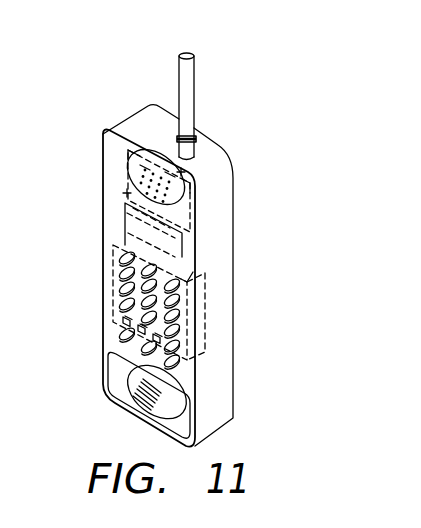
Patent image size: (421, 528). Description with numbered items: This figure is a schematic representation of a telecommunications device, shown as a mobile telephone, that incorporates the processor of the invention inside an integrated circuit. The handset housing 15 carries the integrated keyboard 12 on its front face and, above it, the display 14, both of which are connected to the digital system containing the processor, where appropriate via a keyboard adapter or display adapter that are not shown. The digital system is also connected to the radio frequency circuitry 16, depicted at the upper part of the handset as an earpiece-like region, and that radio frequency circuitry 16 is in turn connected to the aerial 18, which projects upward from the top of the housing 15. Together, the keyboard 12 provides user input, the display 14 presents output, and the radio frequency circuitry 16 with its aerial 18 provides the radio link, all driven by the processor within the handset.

The aerial 18 is at (189, 88).
The radio frequency (RF) circuitry 16 is at (122, 191).
The display 14 is at (125, 228).
The keyboard 12 is at (118, 287).
The housing 15 is at (227, 372).